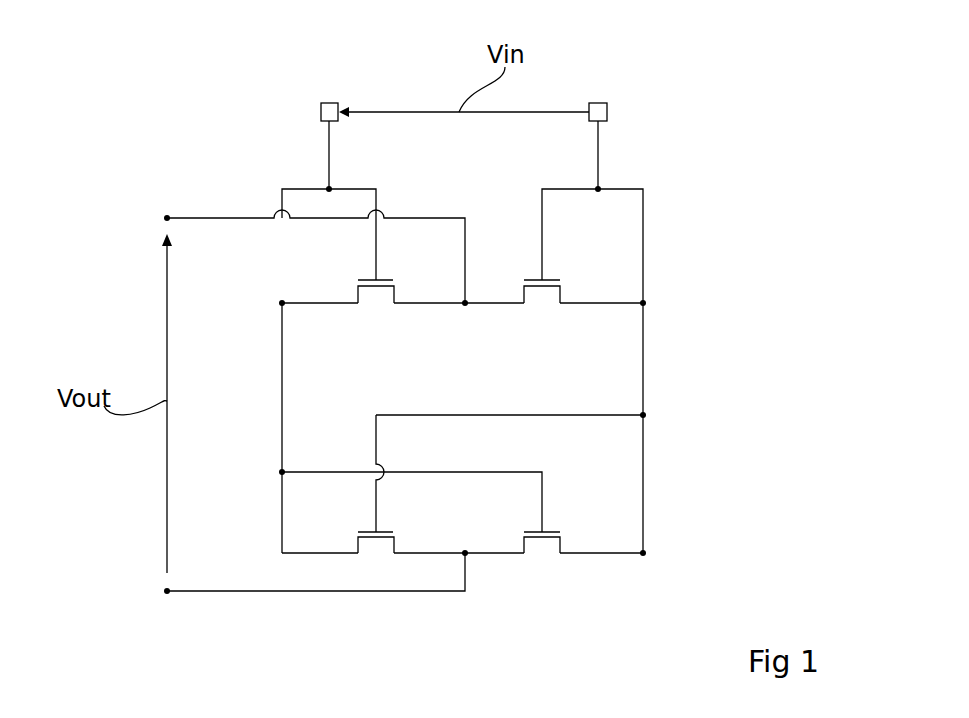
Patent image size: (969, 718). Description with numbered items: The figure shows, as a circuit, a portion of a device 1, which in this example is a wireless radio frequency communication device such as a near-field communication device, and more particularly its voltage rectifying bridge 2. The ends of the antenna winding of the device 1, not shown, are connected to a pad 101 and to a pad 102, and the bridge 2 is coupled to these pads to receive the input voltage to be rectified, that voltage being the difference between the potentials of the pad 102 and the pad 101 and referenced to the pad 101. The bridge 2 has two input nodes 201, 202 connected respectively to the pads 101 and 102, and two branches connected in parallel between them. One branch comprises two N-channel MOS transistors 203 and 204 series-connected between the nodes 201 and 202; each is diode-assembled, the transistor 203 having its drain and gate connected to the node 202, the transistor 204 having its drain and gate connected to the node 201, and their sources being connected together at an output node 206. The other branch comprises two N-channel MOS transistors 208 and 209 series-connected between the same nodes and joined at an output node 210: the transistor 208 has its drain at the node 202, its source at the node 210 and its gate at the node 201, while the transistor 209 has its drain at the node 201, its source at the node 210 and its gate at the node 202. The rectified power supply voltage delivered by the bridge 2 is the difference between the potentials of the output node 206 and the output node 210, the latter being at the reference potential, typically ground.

The device 1 is at (752, 73).
The rectifying bridge 2 is at (661, 365).
The pad 101 is at (599, 108).
The pad 102 is at (331, 107).
The node 201 is at (600, 189).
The node 202 is at (332, 188).
The N-channel MOS transistor 203 is at (373, 300).
The N-channel MOS transistor 204 is at (543, 300).
The output node 206 is at (167, 218).
The N-channel MOS transistor 208 is at (376, 549).
The N-channel MOS transistor 209 is at (542, 554).
The output node 210 is at (167, 593).